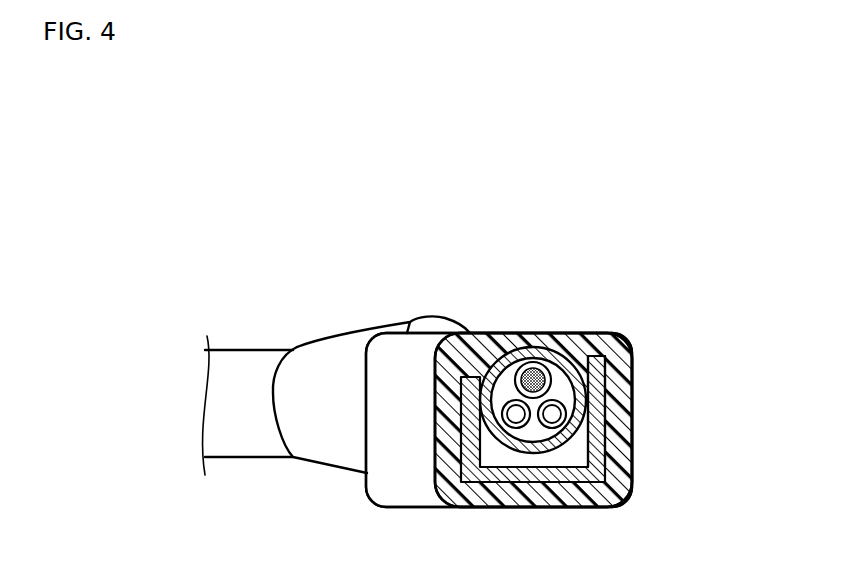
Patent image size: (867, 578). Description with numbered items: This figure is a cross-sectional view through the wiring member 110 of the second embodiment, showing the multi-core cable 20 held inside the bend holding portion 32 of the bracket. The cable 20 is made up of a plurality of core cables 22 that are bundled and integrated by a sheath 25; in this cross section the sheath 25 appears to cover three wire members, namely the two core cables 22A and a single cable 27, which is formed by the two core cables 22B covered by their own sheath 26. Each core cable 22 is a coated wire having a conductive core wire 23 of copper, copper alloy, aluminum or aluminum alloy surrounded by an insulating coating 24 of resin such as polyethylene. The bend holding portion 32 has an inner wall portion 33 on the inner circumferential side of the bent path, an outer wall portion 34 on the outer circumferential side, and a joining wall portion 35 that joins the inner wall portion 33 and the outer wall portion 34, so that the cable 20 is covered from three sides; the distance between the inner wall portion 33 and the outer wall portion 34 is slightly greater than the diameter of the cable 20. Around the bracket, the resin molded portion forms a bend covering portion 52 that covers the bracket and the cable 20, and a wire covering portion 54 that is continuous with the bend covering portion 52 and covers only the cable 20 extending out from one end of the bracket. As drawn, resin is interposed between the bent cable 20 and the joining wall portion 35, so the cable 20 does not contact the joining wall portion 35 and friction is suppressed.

The wiring member 110 is at (325, 217).
The multi-core cable 20 is at (243, 438).
The core cables 22 is at (624, 422).
The core cables 22A is at (522, 425).
The core cables 22B is at (533, 362).
The core wire 23 is at (560, 430).
The coating 24 is at (566, 416).
The sheath 25 is at (588, 338).
The sheath 26 is at (522, 372).
The cable 27 is at (608, 283).
The bend holding portion 32 is at (566, 492).
The inner wall portion 33 is at (440, 429).
The outer wall portion 34 is at (606, 383).
The joining wall portion 35 is at (536, 480).
The bend covering portion 52 is at (405, 493).
The wire covering portion 54 is at (325, 452).